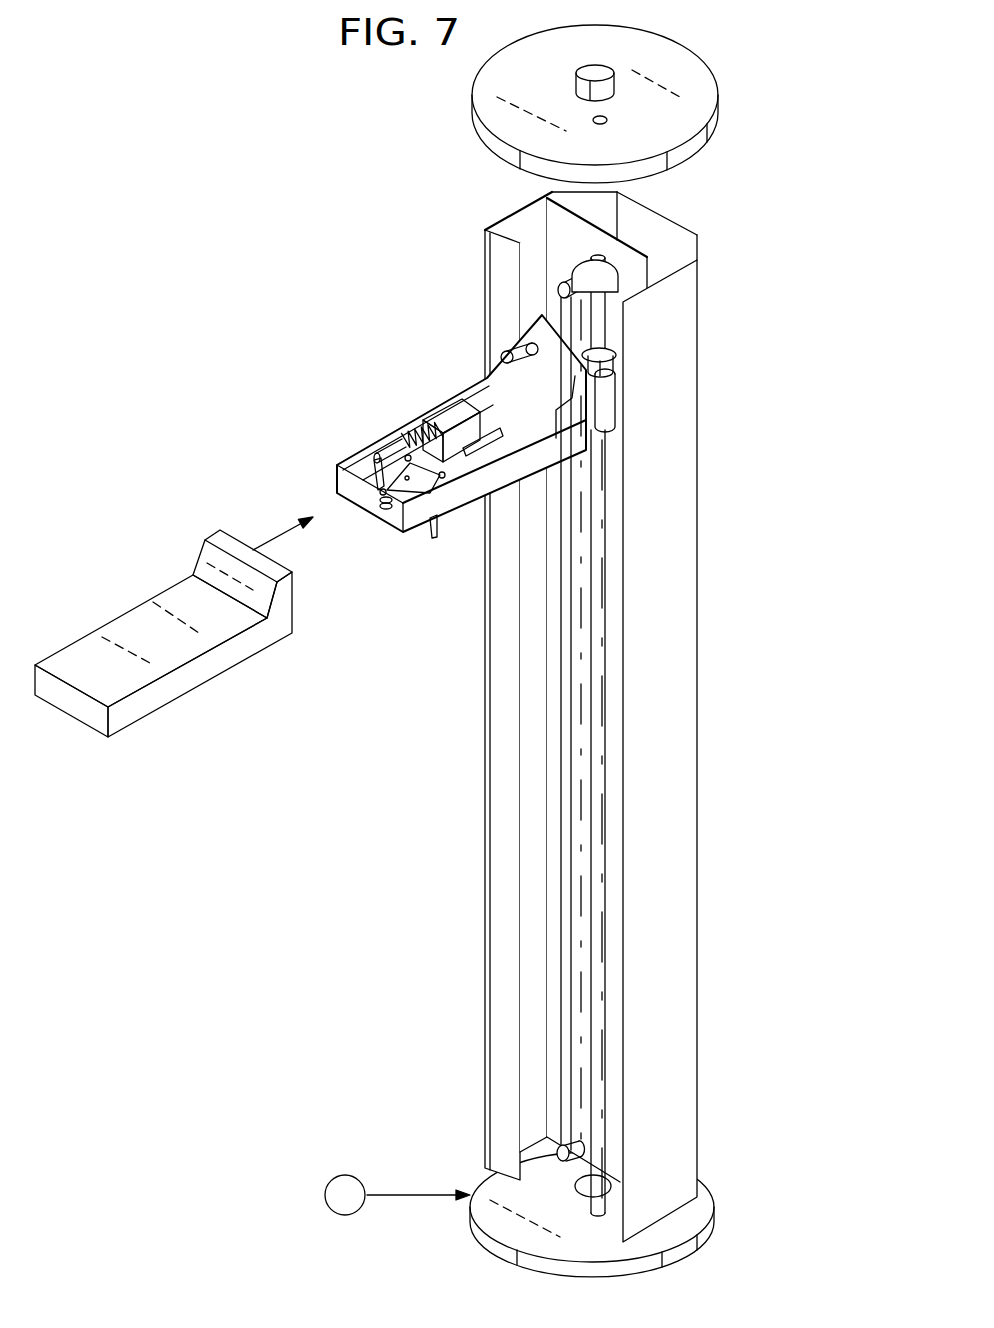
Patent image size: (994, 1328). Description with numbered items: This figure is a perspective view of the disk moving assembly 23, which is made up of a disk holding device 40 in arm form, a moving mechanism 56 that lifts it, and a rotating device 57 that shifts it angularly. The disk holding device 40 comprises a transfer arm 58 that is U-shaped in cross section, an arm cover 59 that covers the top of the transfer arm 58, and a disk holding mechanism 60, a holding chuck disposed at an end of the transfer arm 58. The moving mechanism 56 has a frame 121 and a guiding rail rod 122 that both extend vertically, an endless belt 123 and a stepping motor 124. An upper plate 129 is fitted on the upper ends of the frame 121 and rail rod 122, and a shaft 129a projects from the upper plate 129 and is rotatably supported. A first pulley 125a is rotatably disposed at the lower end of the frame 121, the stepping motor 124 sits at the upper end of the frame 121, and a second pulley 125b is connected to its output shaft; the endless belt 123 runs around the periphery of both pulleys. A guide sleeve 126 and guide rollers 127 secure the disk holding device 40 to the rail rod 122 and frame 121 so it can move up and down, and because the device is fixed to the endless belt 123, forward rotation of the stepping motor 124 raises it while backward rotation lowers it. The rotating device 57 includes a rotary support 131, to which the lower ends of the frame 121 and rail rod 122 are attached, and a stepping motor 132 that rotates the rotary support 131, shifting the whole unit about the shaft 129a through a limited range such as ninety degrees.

The disk moving assembly 23 is at (366, 240).
The disk holding device 40 is at (427, 459).
The moving mechanism 56 is at (523, 701).
The rotating device 57 is at (469, 1187).
The transfer arm 58 is at (418, 522).
The arm cover 59 is at (175, 688).
The disk holding mechanism 60 is at (357, 486).
The frame 121 is at (677, 650).
The rail rod 122 is at (606, 320).
The endless belt 123 is at (573, 1092).
The stepping motor 124 is at (610, 280).
The first pulley 125a is at (559, 1158).
The second pulley 125b is at (559, 288).
The guide sleeve 126 is at (606, 392).
The guide rollers 127 is at (545, 348).
The upper plate 129 is at (705, 84).
The shaft 129a is at (578, 91).
The rotary support 131 is at (478, 1218).
The stepping motor 132 is at (325, 1196).